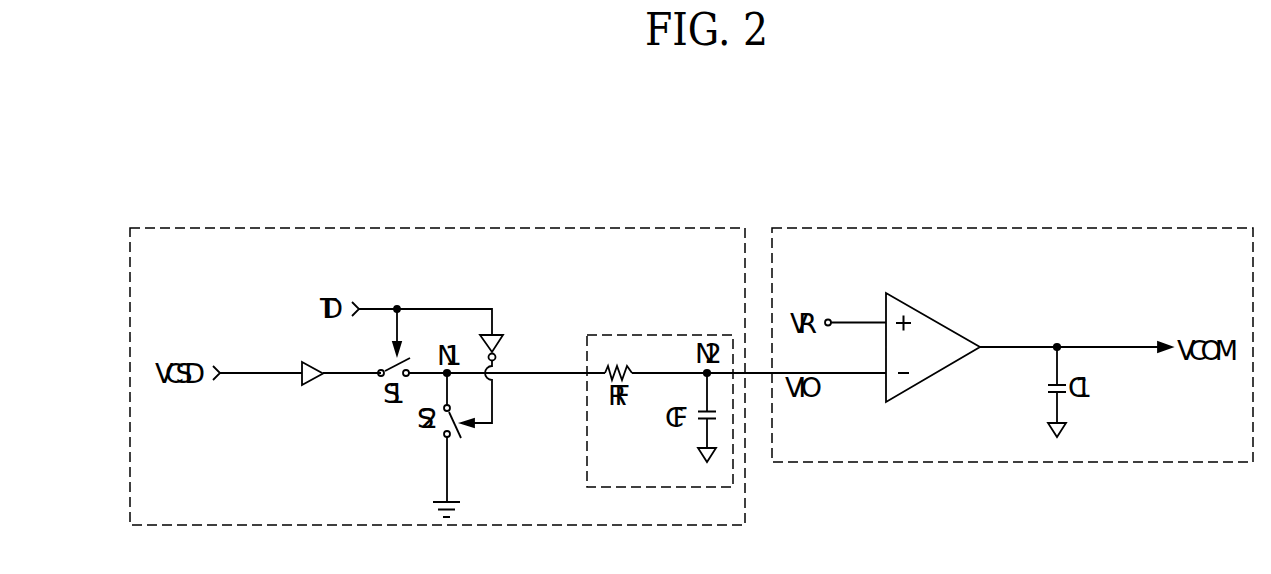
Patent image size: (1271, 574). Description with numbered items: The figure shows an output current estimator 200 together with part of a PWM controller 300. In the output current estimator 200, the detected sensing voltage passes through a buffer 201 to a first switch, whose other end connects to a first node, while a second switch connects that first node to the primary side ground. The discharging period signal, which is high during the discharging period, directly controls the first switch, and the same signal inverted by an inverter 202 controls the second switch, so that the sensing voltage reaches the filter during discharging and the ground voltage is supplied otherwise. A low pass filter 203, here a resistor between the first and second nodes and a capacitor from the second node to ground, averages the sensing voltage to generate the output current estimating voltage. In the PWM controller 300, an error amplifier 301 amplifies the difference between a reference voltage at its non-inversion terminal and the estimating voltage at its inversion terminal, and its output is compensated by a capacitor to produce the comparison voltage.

The output current estimator 200 is at (457, 228).
The buffer 201 is at (302, 365).
The inverter 202 is at (502, 346).
The low pass filter 203 is at (670, 335).
The PWM controller 300 is at (1042, 228).
The error amplifier 301 is at (932, 319).